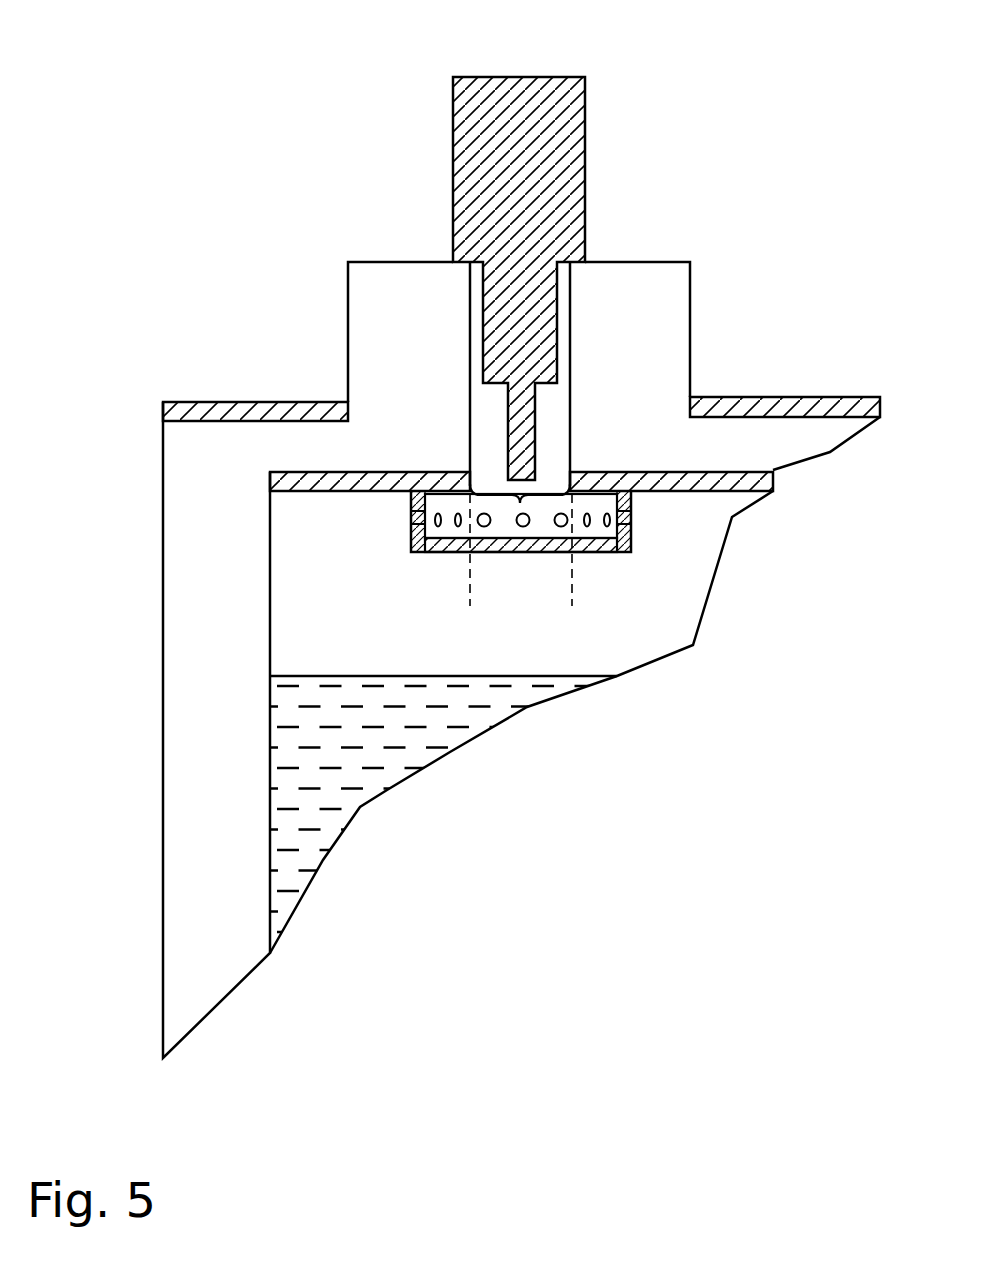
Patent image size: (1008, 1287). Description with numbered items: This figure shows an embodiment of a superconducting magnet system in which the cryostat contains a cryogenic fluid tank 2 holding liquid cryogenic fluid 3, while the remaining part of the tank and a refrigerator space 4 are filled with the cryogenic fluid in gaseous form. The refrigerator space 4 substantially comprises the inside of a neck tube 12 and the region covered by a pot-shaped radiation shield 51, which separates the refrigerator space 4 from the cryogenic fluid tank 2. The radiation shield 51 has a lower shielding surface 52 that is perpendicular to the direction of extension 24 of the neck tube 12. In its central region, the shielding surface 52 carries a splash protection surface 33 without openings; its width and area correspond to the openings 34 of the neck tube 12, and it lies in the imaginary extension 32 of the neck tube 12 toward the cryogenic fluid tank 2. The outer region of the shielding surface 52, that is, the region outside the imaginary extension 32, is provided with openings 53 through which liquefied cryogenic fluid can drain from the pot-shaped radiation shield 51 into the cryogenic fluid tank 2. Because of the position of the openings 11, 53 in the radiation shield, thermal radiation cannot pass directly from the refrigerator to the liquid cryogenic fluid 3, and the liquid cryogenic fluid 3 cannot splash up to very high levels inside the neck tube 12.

The cryogenic fluid tank 2 is at (300, 585).
The liquid cryogenic fluid 3 is at (290, 729).
The refrigerator space 4 is at (557, 394).
The openings 11 is at (630, 514).
The neck tube 12 is at (468, 323).
The direction of extension 24 is at (512, 50).
The imaginary extension 32 is at (470, 590).
The splash protection surface 33 is at (522, 553).
The openings of the neck tube 34 is at (482, 490).
The pot-shaped radiation shield 51 is at (622, 561).
The lower shielding surface 52 is at (455, 553).
The openings 53 is at (597, 553).